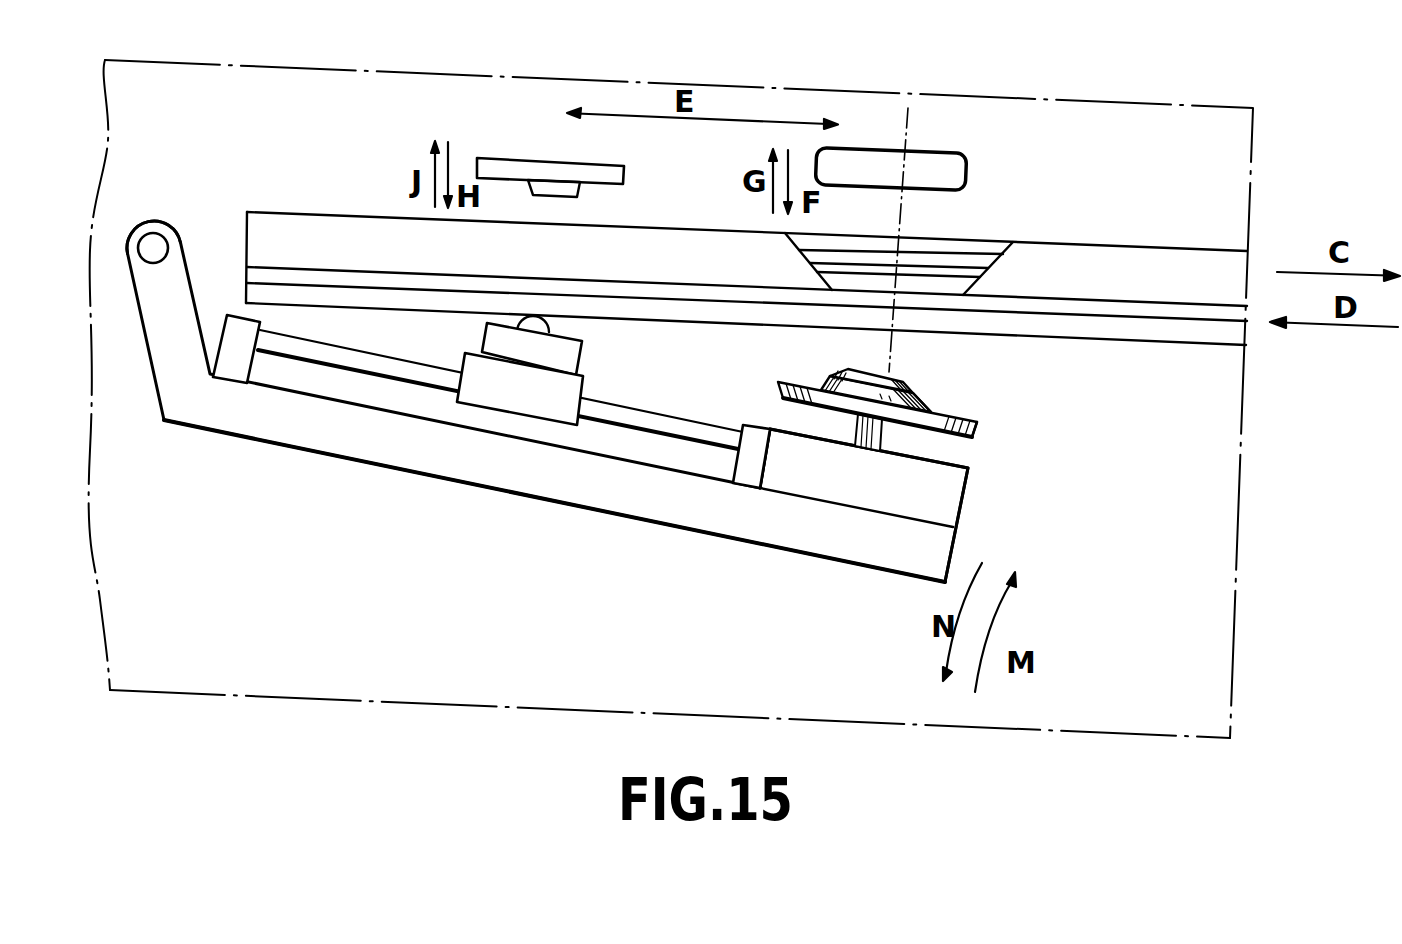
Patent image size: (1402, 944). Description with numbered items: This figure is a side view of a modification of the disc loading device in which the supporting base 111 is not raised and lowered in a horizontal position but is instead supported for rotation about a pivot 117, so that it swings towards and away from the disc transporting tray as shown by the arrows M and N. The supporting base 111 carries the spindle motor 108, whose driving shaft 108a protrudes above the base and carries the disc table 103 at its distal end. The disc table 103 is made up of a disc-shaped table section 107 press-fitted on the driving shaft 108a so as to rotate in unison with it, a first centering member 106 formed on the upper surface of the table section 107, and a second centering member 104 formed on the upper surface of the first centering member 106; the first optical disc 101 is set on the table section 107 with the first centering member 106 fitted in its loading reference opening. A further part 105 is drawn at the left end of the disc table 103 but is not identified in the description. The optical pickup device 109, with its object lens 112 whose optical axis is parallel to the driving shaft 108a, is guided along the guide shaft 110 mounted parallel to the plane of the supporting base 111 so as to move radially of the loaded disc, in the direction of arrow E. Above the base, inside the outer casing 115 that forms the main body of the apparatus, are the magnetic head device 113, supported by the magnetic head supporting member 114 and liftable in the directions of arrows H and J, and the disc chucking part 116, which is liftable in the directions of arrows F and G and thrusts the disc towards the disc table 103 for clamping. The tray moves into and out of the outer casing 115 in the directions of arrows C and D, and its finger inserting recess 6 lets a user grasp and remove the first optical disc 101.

The finger inserting recess 6 is at (967, 287).
The first optical disc 101 is at (950, 260).
The disc table 103 is at (992, 433).
The second centering member 104 is at (913, 383).
The gear 105 is at (828, 368).
The first centering member 106 is at (933, 400).
The table section 107 is at (783, 375).
The spindle motor 108 is at (948, 507).
The driving shaft 108a is at (884, 433).
The optical pickup device 109 is at (520, 400).
The guide shaft 110 is at (402, 373).
The supporting base 111 is at (660, 510).
The object lens 112 is at (545, 323).
The magnetic head device 113 is at (560, 192).
The magnetic head supporting member 114 is at (623, 170).
The outer casing 115 is at (928, 105).
The disc chucking part 116 is at (865, 153).
The pivot 117 is at (155, 237).